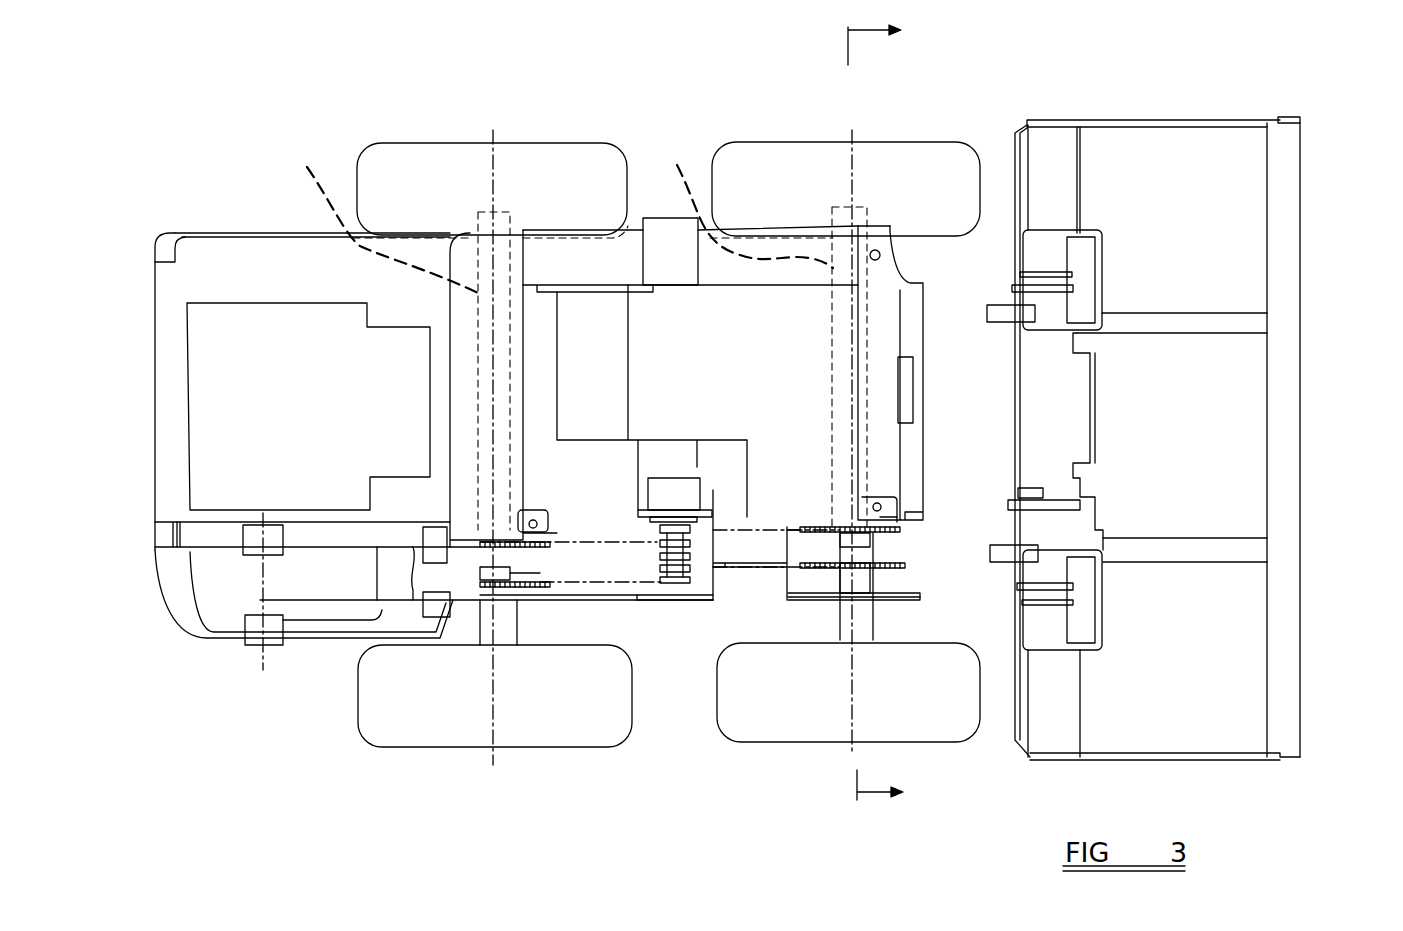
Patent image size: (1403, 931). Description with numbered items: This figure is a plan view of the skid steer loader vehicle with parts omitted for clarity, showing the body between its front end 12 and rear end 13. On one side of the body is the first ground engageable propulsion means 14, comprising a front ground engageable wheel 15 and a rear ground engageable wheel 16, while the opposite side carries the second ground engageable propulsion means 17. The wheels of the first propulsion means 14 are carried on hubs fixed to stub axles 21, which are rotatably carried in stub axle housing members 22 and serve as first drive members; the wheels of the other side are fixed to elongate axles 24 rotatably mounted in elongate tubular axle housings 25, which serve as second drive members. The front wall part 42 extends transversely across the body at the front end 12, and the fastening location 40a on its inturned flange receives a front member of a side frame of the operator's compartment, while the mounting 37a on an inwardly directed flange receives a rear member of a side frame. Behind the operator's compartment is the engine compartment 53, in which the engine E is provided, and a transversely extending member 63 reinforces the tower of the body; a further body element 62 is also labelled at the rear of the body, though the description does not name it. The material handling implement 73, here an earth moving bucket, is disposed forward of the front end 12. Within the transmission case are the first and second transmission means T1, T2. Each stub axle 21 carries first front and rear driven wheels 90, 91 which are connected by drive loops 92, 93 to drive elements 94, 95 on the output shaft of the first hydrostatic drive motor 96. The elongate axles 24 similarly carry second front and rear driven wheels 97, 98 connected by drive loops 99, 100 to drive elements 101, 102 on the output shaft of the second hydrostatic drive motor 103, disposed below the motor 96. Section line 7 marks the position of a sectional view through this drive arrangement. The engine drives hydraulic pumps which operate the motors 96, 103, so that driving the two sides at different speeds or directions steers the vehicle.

The section line 7- 7 is at (884, 410).
The front end 12 is at (854, 810).
The rear end 13 is at (206, 781).
The first ground engageable propulsion means 14 is at (693, 776).
The front ground engageable wheel 15 is at (917, 740).
The rear ground engageable wheel 16 is at (548, 745).
The second ground engageable propulsion means 17 is at (643, 130).
The stub axle 21 is at (487, 572).
The stub axle housing member 22 is at (517, 632).
The elongate axle 24 is at (478, 540).
The elongate tubular axle housing 25 is at (564, 212).
The mounting 37a is at (985, 436).
The fastening location 40a is at (875, 250).
The front wall part 42 is at (903, 320).
The engine compartment 53 is at (257, 298).
The hook 62 is at (212, 540).
The transversely extending member 63 is at (337, 570).
The material handling implement 73 is at (1313, 680).
The first front driven wheel 90 is at (815, 567).
The first rear driven wheel 91 is at (530, 587).
The drive loop 92 is at (724, 568).
The drive loop 93 is at (615, 582).
The drive element 94 is at (697, 567).
The drive element 95 is at (665, 583).
The first hydrostatic drive motor 96 is at (697, 497).
The second front driven wheel 97 is at (880, 517).
The second rear driven wheel 98 is at (445, 540).
The drive loop 99 is at (787, 527).
The drive loop 100 is at (575, 537).
The drive element 101 is at (640, 520).
The drive element 102 is at (665, 473).
The second hydrostatic drive motor 103 is at (695, 472).
The first transmission means T1 is at (717, 620).
The second transmission means T2 is at (533, 505).